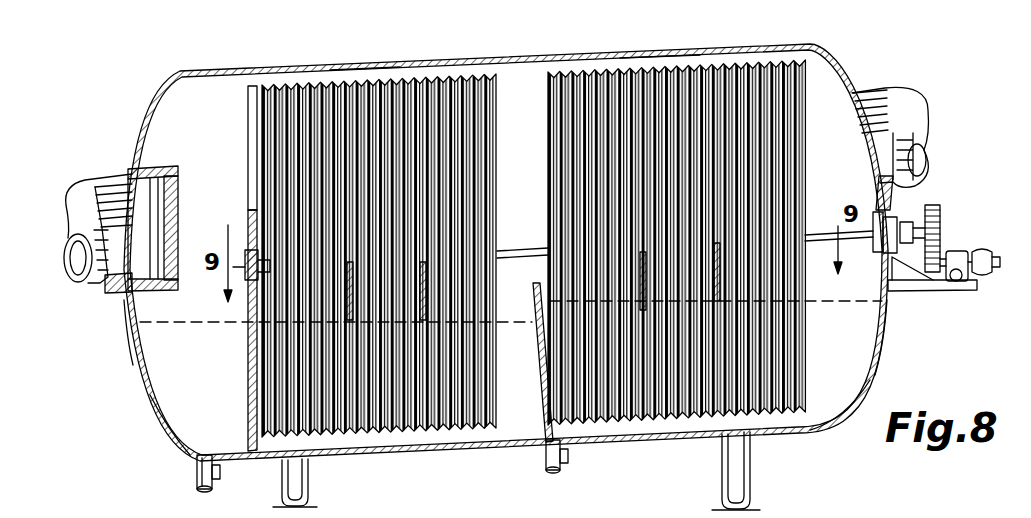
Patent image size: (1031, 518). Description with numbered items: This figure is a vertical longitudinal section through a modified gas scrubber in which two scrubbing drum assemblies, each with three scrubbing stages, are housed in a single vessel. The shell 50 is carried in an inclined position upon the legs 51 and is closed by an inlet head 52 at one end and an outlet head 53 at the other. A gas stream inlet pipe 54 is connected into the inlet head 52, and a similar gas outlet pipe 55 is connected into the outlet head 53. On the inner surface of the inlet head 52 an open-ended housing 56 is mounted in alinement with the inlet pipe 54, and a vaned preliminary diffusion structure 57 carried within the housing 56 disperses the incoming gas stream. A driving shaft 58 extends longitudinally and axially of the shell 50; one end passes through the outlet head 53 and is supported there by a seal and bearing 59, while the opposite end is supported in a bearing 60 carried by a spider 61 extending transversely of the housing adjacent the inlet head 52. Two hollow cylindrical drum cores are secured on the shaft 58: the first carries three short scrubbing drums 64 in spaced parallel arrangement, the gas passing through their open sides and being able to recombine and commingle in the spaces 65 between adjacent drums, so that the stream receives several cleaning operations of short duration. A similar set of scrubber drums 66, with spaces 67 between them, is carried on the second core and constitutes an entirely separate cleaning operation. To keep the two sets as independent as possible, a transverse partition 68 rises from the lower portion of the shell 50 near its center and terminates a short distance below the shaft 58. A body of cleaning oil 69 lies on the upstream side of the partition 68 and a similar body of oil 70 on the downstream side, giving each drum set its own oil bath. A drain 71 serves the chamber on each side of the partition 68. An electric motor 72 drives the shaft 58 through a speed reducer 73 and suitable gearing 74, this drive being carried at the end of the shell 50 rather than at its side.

The shell 50 is at (672, 443).
The legs 51 is at (340, 490).
The inlet head 52 is at (134, 362).
The outlet head 53 is at (872, 377).
The gas stream inlet pipe 54 is at (78, 200).
The gas outlet pipe 55 is at (900, 108).
The open-ended housing 56 is at (172, 288).
The vaned preliminary diffusion structure 57 is at (172, 198).
The driving shaft 58 is at (548, 247).
The seal and bearing 59 is at (876, 248).
The bearing 60 is at (246, 256).
The spider 61 is at (257, 347).
The scrubbing drums 64 is at (308, 73).
The spaces 65 is at (355, 68).
The scrubber drums 66 is at (583, 85).
The spaces 67 is at (648, 63).
The transverse partition 68 is at (538, 413).
The body of cleaning oil 69 is at (182, 412).
The body of oil 70 is at (817, 367).
The drain 71 is at (567, 468).
The electric motor 72 is at (984, 256).
The speed reducer 73 is at (955, 249).
The gearing 74 is at (933, 205).